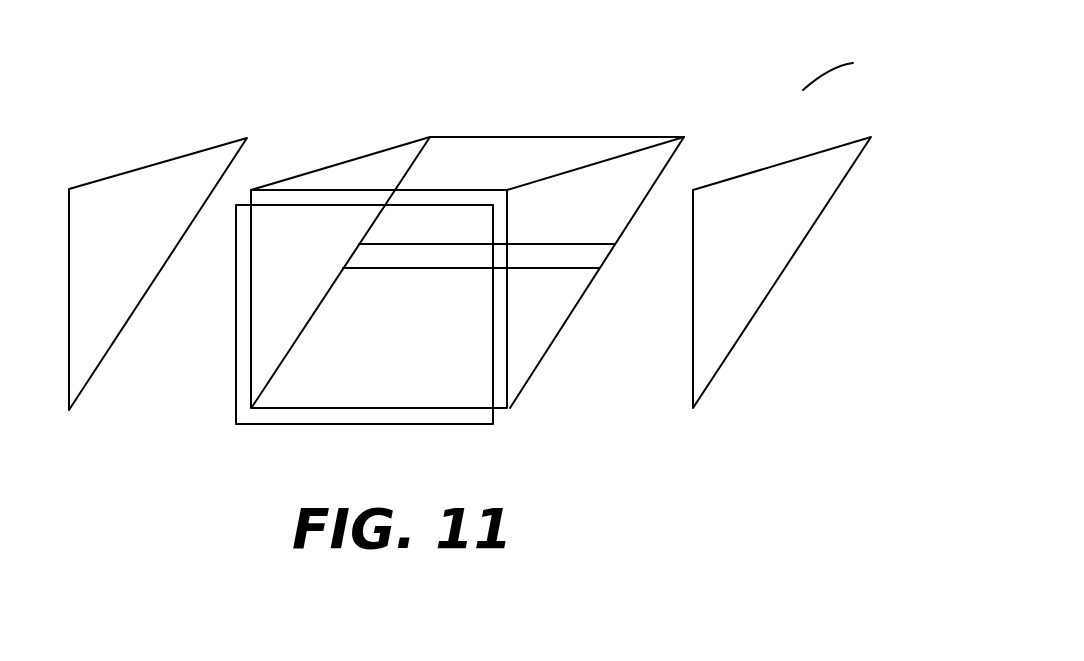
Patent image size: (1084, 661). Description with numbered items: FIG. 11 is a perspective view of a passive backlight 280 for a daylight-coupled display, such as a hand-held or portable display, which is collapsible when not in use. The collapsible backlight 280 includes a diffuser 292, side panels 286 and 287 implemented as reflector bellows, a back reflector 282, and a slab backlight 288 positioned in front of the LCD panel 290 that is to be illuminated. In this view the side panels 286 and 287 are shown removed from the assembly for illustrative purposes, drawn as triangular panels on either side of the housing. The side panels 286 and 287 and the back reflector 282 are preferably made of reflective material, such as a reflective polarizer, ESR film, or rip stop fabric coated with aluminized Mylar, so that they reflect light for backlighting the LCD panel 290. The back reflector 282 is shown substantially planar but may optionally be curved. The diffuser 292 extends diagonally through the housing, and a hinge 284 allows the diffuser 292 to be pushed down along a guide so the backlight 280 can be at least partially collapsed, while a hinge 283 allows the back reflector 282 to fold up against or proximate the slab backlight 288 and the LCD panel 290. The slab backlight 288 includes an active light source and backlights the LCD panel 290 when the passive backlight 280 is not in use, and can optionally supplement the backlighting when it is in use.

The passive backlight 280 is at (856, 69).
The back reflector 282 is at (460, 173).
The hinge 283 is at (476, 425).
The hinge 284 is at (666, 136).
The side panel 286 is at (803, 192).
The side panel 287 is at (110, 197).
The slab backlight 288 is at (500, 368).
The LCD panel 290 is at (247, 385).
The diffuser 292 is at (373, 168).